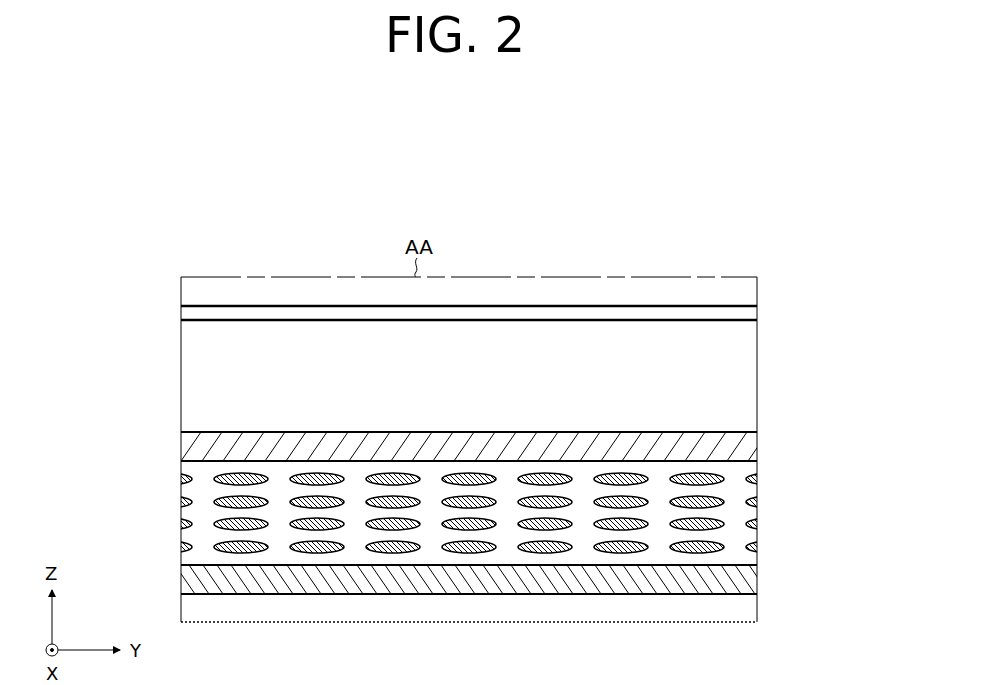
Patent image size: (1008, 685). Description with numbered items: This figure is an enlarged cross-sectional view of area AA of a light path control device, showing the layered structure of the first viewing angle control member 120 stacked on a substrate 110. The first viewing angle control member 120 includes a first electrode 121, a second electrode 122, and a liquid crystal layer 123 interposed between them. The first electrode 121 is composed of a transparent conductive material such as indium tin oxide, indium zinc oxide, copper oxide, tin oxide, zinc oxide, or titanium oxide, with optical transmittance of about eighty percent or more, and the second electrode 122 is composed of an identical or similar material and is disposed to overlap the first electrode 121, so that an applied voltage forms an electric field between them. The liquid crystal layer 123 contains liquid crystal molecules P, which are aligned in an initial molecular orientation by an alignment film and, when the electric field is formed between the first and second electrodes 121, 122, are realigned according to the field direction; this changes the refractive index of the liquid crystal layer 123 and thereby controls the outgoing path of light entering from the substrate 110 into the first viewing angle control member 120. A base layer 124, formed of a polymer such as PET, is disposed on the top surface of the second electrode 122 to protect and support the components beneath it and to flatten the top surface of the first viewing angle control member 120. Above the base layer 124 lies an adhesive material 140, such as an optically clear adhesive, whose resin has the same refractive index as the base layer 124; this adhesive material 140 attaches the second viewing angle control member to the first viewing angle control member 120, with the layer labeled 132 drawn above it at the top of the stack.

The substrate 110 is at (737, 609).
The first viewing angle control member 120 is at (826, 378).
The first electrode 121 is at (737, 579).
The second electrode 122 is at (737, 447).
The liquid crystal layer 123 is at (479, 513).
The base layer 124 is at (737, 378).
The cover window 132 is at (737, 288).
The adhesive material 140 is at (737, 315).
The liquid crystal molecules P is at (212, 473).